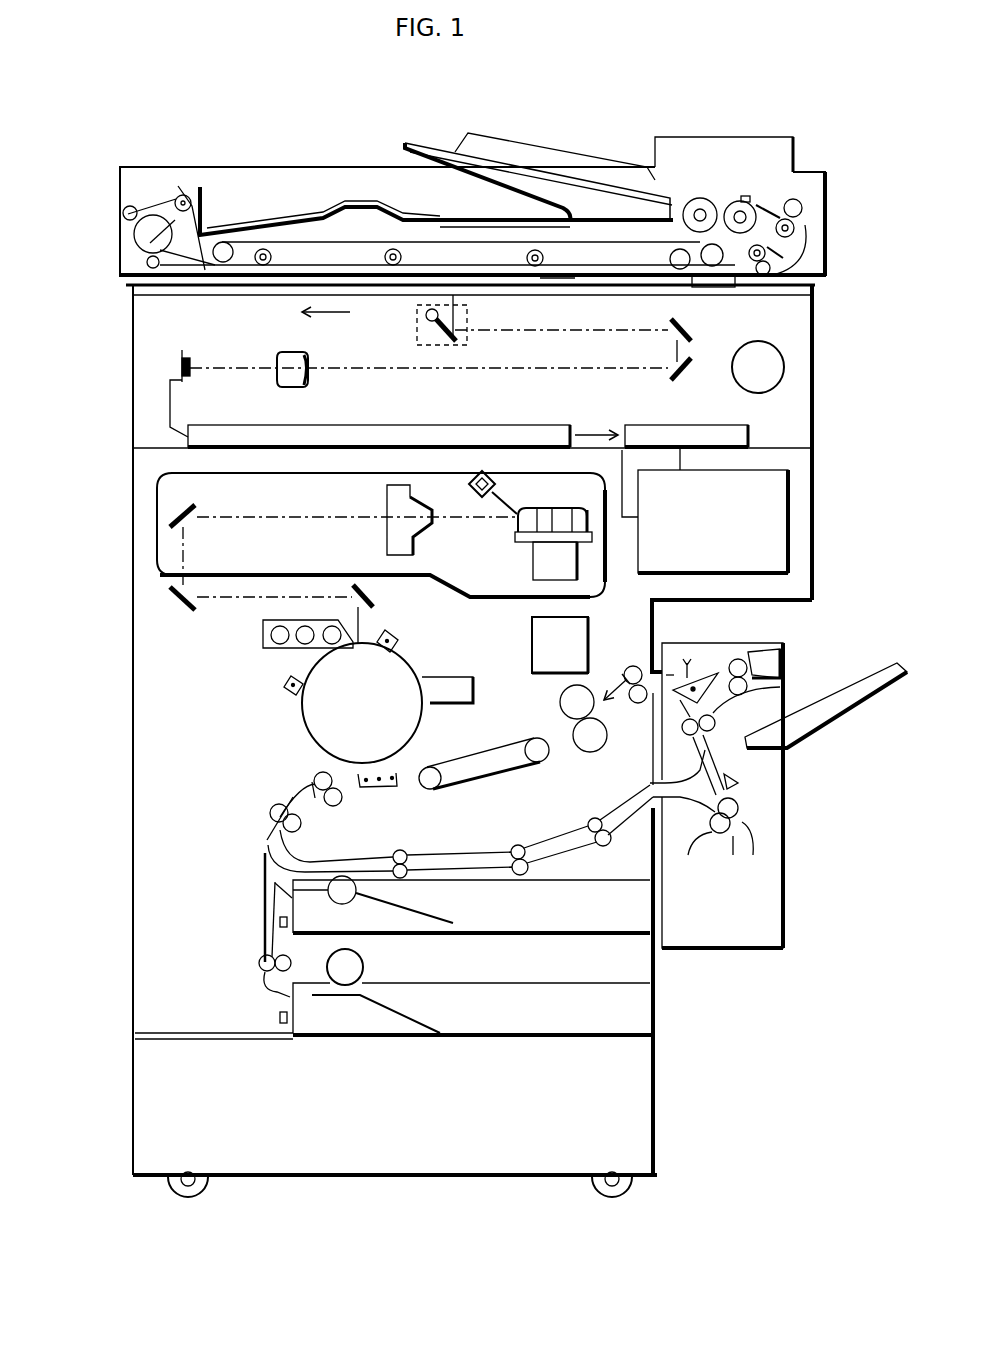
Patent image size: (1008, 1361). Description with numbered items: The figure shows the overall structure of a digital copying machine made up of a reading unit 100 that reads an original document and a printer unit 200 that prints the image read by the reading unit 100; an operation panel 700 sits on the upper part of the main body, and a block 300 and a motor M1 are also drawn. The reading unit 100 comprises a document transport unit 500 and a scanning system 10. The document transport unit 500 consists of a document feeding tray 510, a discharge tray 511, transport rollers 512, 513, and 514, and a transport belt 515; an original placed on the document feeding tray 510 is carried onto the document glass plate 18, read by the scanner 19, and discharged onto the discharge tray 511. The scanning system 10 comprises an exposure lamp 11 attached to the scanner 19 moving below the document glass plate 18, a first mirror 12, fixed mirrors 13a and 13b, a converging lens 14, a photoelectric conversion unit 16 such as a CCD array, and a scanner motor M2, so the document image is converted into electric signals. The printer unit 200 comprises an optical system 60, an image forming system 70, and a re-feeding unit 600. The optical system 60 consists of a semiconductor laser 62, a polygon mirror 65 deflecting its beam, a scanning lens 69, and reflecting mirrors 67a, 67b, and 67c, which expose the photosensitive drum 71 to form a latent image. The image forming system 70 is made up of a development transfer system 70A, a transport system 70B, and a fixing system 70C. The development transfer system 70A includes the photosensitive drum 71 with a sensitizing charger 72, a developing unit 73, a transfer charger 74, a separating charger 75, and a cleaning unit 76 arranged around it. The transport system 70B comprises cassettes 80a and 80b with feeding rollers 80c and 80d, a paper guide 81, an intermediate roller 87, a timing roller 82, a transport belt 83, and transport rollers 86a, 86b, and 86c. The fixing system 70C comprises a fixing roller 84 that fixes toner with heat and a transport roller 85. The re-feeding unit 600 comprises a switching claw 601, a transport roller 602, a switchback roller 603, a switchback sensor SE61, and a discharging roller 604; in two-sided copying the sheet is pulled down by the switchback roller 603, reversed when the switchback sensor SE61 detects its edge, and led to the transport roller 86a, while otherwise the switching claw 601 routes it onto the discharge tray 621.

The reading unit 100 is at (830, 405).
The printer unit 200 is at (905, 589).
The controller 300 is at (785, 532).
The document transport unit 500 is at (305, 160).
The document feeding tray 510 is at (529, 140).
The discharge tray 511 is at (248, 222).
The transport roller 512 is at (712, 198).
The transport roller 513 is at (802, 203).
The transport roller 514 is at (133, 222).
The transport belt 515 is at (433, 243).
The operation panel 700 is at (790, 138).
The scanning system 10 is at (421, 360).
The exposure lamp 11 is at (426, 313).
The first mirror 12 is at (462, 335).
The fixed mirror 13a is at (688, 325).
The fixed mirror 13b is at (687, 378).
The converging lens 14 is at (278, 381).
The photoelectric conversion unit 16 is at (192, 358).
The document glass plate 18 is at (549, 281).
The scanner 19 is at (468, 312).
The optical system 60 is at (325, 485).
The semiconductor laser 62 is at (467, 482).
The polygon mirror 65 is at (550, 527).
The reflecting mirror 67a is at (188, 500).
The reflecting mirror 67b is at (177, 602).
The reflecting mirror 67c is at (375, 598).
The scanning lens 69 is at (386, 540).
The image forming system 70 is at (516, 631).
The development transfer system 70A is at (258, 670).
The transport system 70B is at (470, 846).
The fixing system 70C is at (535, 721).
The photosensitive drum 71 is at (328, 700).
The sensitizing charger 72 is at (400, 632).
The developing unit 73 is at (262, 630).
The transfer charger 74 is at (368, 790).
The separating charger 75 is at (400, 788).
The cleaning unit 76 is at (475, 683).
The paper cassette 80a is at (547, 883).
The paper cassette 80b is at (488, 995).
The feeding roller 80c is at (350, 903).
The feeding roller 80d is at (365, 962).
The paper guide 81 is at (258, 868).
The timing roller 82 is at (316, 781).
The transport belt 83 is at (453, 760).
The fixing roller 84 is at (577, 750).
The transport roller 85 is at (628, 668).
The transport roller 86a is at (590, 822).
The transport roller 86b is at (513, 850).
The transport roller 86c is at (393, 855).
The intermediate roller 87 is at (272, 806).
The re-feeding unit 600 is at (792, 875).
The switching claw 601 is at (695, 685).
The transport roller 602 is at (783, 695).
The switchback roller 603 is at (715, 841).
The discharging roller 604 is at (750, 655).
The discharge tray 621 is at (858, 682).
The switchback sensor SE61 is at (740, 783).
The main motor M1 is at (560, 645).
The scanner motor M2 is at (758, 367).